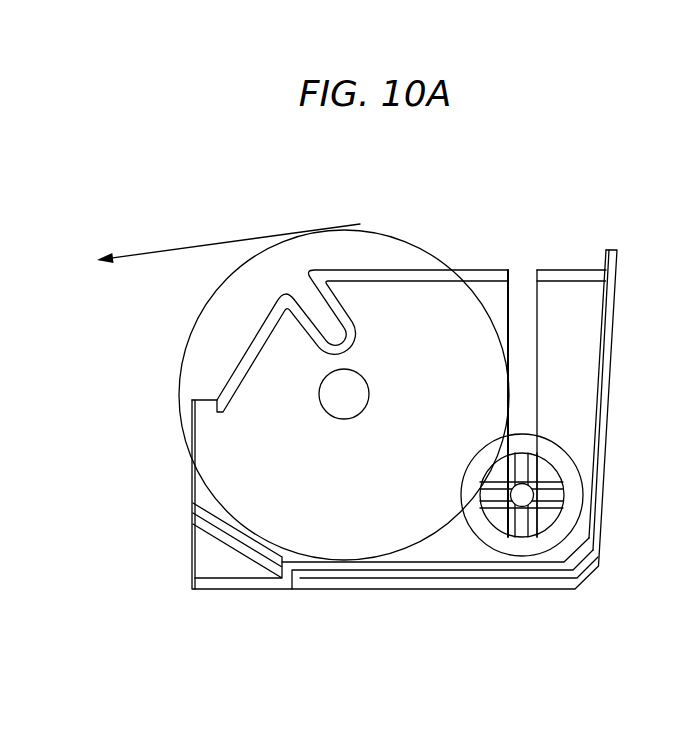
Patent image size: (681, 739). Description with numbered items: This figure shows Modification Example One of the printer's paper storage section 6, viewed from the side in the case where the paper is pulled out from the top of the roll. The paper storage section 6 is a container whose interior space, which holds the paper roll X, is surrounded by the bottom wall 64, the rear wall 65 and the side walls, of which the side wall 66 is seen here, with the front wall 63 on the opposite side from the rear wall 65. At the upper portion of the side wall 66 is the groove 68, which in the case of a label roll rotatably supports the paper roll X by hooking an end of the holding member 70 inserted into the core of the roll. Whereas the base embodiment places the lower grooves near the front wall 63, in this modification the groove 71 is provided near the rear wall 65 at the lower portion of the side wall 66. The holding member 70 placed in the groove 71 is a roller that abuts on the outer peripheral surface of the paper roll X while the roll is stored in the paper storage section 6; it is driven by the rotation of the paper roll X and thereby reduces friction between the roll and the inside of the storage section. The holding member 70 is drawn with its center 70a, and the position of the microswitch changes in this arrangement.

The paper storage section 6 is at (553, 177).
The front wall 63 is at (192, 484).
The bottom wall 64 is at (450, 556).
The rear wall 65 is at (601, 320).
The side wall 66 is at (583, 290).
The groove 68 is at (311, 268).
The holding member 70 is at (509, 548).
The shaft 70a is at (524, 497).
The groove 71 is at (524, 283).
The paper roll X is at (415, 243).